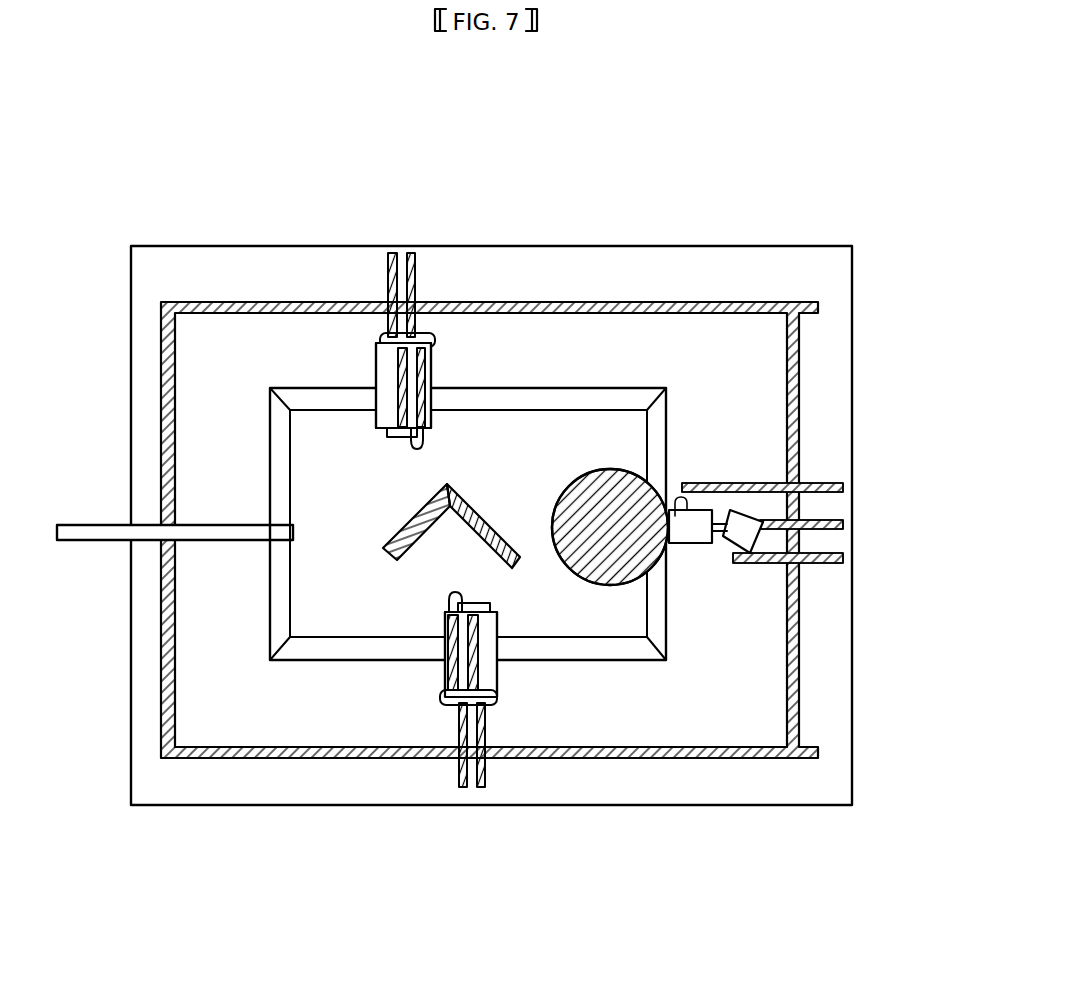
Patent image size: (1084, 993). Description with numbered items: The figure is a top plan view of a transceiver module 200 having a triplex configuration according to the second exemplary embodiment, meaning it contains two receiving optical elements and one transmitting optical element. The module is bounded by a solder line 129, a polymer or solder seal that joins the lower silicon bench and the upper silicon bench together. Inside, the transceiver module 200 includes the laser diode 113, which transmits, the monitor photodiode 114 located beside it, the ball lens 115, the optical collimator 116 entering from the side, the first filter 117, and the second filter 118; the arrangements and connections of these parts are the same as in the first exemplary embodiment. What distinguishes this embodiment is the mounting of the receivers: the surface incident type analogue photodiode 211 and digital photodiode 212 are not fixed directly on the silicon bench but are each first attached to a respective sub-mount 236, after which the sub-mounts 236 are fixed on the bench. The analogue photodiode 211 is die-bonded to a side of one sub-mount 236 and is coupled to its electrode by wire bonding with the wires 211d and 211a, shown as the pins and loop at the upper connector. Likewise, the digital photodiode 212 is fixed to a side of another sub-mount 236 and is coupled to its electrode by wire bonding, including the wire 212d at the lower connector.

The transceiver module 200 is at (803, 123).
The solder line 129 is at (168, 592).
The optical collimator 116 is at (107, 525).
The first filter 117 is at (473, 540).
The second filter 118 is at (423, 513).
The ball lens 115 is at (640, 578).
The laser diode 113 is at (695, 510).
The monitor photodiode 114 is at (736, 510).
The analogue photodiode 211 is at (377, 432).
The wire 211a is at (386, 338).
The wire 211d is at (427, 445).
The digital photodiode 212 is at (490, 605).
The wire 212d is at (449, 603).
The sub-mount 236 is at (376, 373).